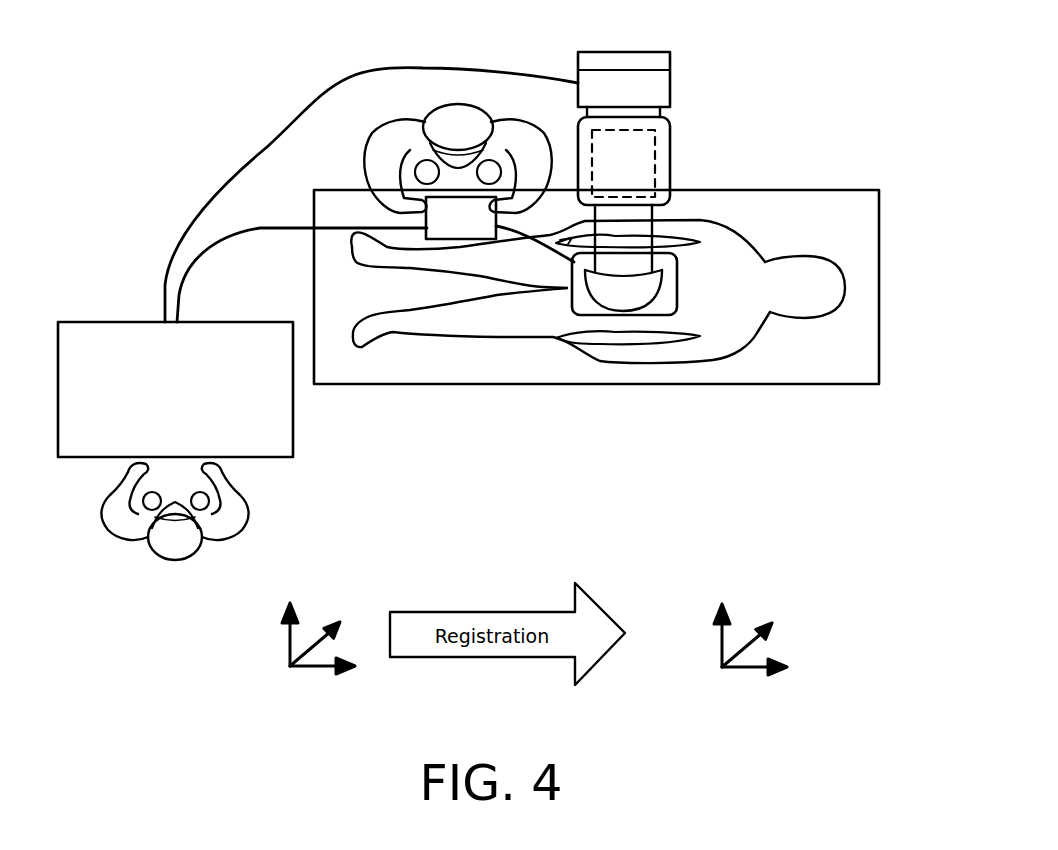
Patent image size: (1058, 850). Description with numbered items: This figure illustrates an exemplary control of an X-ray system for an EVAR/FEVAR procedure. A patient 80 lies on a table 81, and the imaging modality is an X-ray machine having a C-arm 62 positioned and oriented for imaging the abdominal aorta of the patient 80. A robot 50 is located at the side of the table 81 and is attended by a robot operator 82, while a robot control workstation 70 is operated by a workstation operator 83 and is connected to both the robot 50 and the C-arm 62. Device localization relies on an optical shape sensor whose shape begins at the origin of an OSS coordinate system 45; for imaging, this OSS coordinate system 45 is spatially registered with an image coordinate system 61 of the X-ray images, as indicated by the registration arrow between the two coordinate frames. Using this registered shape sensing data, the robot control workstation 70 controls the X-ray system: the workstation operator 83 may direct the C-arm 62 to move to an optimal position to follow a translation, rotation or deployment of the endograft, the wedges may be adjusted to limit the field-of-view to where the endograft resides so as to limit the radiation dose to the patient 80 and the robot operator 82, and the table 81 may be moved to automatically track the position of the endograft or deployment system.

The OSS coordinate system 45 is at (288, 648).
The robot 50 is at (500, 229).
The image coordinate system 61 is at (720, 648).
The C-arm 62 is at (670, 83).
The robot control workstation 70 is at (125, 320).
The patient 80 is at (757, 328).
The table 81 is at (827, 189).
The robot operator 82 is at (457, 103).
The workstation operator 83 is at (257, 510).